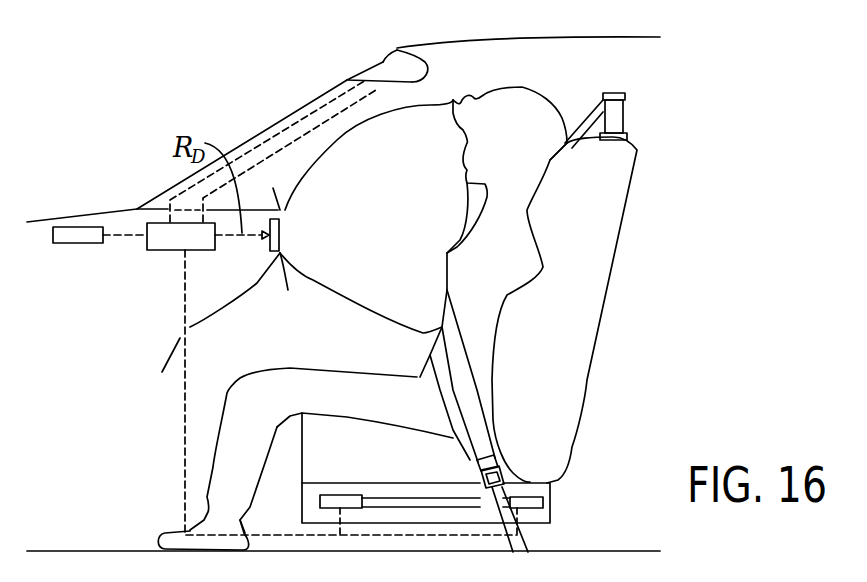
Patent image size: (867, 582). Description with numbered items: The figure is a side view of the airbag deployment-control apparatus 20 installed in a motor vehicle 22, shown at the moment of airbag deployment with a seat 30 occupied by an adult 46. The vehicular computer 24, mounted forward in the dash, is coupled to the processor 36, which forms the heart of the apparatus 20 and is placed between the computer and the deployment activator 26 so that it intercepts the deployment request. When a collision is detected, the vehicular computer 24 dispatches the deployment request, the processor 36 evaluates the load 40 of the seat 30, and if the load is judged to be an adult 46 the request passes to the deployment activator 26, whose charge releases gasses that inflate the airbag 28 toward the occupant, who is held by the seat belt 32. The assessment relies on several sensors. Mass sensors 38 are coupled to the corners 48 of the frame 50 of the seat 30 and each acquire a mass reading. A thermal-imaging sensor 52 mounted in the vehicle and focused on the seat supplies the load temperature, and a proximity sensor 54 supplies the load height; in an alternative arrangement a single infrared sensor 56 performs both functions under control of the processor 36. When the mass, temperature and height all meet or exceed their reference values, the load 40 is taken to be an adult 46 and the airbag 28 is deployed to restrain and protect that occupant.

The airbag deployment-control apparatus 20 is at (742, 415).
The motor vehicle 22 is at (120, 208).
The vehicular computer 24 is at (93, 233).
The deployment activator 26 is at (272, 245).
The airbag 28 is at (396, 208).
The seat 30 is at (315, 427).
The seat belt 32 is at (483, 445).
The processor 36 is at (163, 233).
The mass sensors 38 is at (322, 500).
The load 40 is at (528, 123).
The adult 46 is at (523, 253).
The corners 48 is at (300, 515).
The frame 50 is at (343, 483).
The thermal-imaging sensor 52 is at (387, 60).
The proximity sensor 54 is at (380, 72).
The infrared sensor 56 is at (407, 60).